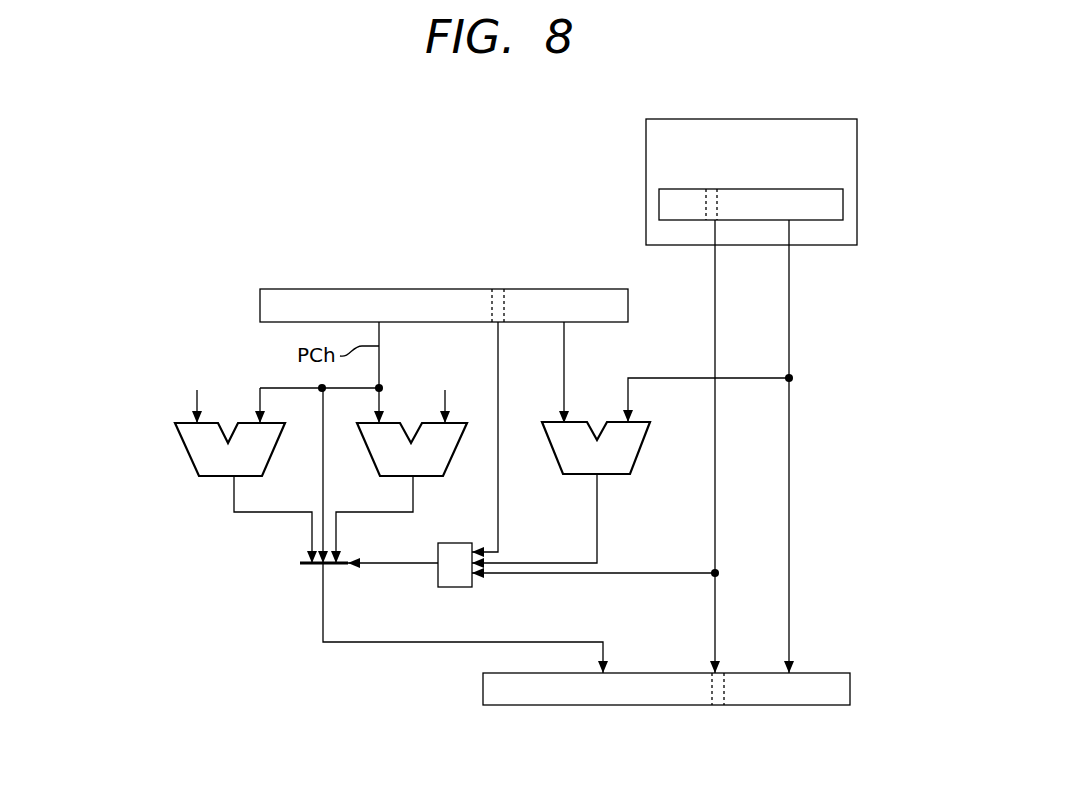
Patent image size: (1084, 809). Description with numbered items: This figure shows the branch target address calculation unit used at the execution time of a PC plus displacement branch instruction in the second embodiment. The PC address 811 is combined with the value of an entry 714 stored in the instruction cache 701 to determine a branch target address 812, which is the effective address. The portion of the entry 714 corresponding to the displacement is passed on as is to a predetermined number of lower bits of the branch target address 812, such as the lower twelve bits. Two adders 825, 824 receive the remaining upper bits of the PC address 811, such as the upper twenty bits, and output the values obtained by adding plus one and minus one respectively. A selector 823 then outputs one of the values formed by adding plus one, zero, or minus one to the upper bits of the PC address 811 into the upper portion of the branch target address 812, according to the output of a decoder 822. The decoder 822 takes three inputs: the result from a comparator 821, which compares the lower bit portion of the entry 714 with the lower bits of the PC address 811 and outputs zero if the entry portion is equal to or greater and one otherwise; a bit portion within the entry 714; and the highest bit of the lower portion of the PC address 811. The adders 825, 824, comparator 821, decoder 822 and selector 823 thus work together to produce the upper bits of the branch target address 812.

The instruction cache 701 is at (646, 152).
The entry 714 is at (752, 189).
The PC address 811 is at (400, 289).
The branch target address 812 is at (815, 673).
The comparator 821 is at (615, 476).
The decoder 822 is at (438, 581).
The selector 823 is at (308, 566).
The adder 824 is at (433, 477).
The adder 825 is at (215, 477).